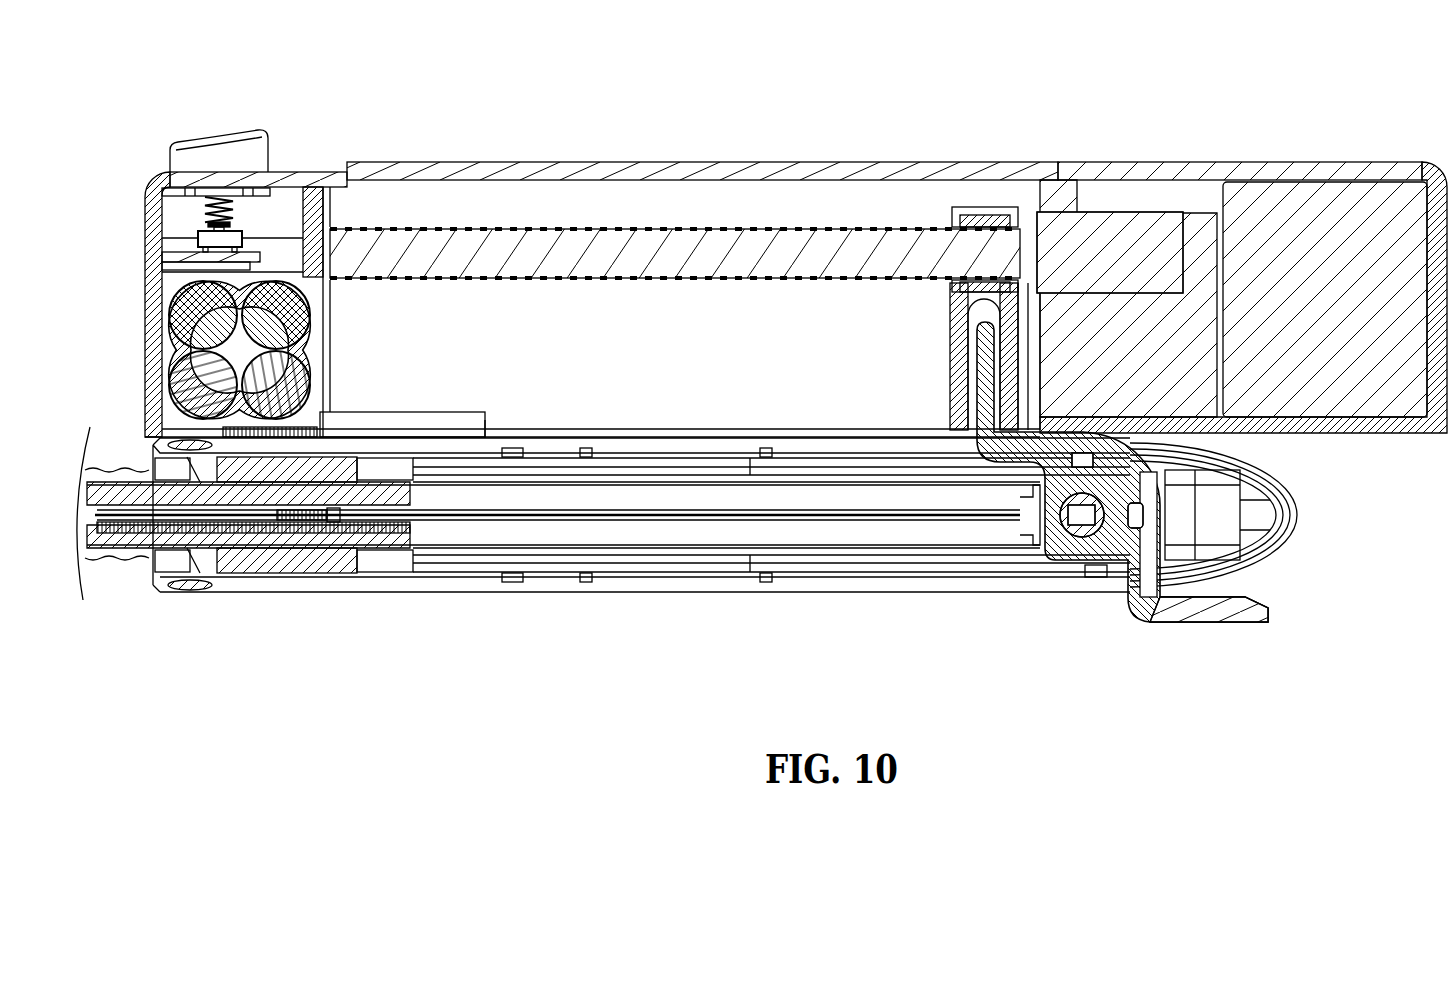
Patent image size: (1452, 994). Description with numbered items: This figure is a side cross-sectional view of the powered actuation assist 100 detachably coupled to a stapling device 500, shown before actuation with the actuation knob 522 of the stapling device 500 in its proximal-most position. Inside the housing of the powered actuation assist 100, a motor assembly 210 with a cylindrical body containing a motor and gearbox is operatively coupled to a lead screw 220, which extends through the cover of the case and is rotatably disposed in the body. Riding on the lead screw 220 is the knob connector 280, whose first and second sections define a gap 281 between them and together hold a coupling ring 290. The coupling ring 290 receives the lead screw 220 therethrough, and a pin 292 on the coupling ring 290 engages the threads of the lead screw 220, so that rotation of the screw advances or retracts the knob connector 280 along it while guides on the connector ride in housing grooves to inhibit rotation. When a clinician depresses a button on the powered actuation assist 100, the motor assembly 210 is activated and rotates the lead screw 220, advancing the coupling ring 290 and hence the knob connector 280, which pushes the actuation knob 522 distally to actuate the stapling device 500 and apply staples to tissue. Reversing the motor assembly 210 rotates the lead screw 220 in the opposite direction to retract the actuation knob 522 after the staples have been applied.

The powered actuation assist 100 is at (570, 142).
The motor assembly 210 is at (1290, 210).
The lead screw 220 is at (663, 243).
The knob connector 280 is at (1067, 215).
The gap 281 is at (980, 235).
The coupling ring 290 is at (966, 222).
The pin 292 is at (985, 240).
The stapling device 500 is at (627, 627).
The actuation knob 522 is at (970, 425).